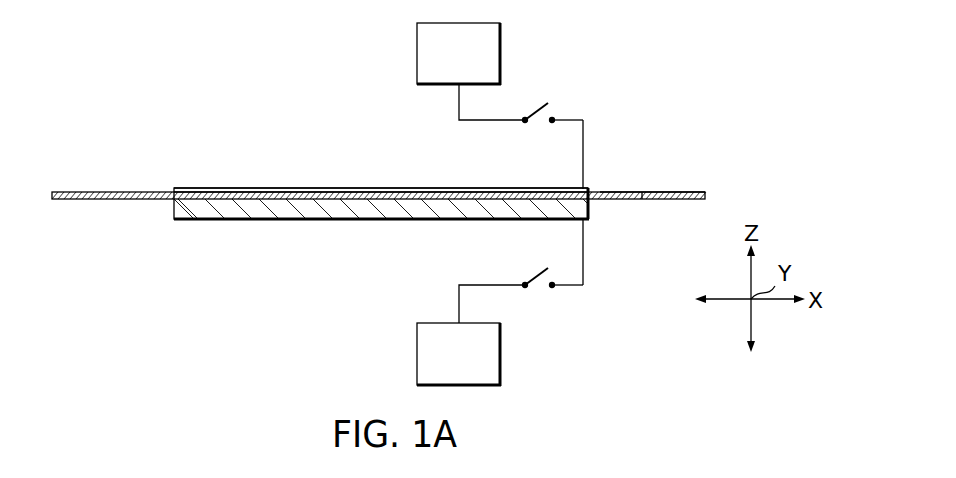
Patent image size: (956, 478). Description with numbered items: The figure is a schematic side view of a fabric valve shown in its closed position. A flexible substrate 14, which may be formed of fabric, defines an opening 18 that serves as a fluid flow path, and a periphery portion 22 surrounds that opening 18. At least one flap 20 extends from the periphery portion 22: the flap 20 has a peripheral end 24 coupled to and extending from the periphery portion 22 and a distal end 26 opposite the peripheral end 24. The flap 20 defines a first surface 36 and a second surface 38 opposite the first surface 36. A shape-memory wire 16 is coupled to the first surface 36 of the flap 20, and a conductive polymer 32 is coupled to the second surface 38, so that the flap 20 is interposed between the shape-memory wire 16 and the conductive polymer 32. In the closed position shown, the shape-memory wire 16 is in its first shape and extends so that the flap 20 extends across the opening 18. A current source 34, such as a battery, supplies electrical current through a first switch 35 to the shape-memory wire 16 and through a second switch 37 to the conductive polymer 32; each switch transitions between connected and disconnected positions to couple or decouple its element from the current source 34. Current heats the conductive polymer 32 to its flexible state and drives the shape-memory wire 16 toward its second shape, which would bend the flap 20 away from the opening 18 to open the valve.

The substrate 14 is at (612, 184).
The shape-memory wire 16 is at (587, 193).
The opening 18 is at (603, 222).
The flap 20 is at (352, 204).
The periphery portion 22 is at (143, 199).
The peripheral end 24 is at (235, 219).
The distal end 26 is at (590, 193).
The conductive polymer 32 is at (584, 226).
The current source 34 is at (500, 50).
The first switch 35 is at (538, 118).
The first surface 36 is at (437, 188).
The second switch 37 is at (538, 283).
The second surface 38 is at (492, 200).